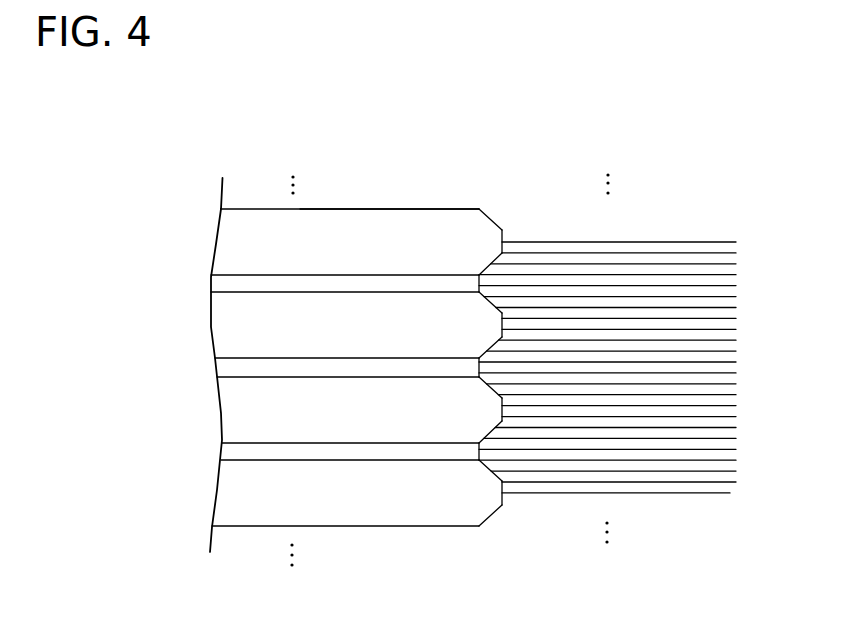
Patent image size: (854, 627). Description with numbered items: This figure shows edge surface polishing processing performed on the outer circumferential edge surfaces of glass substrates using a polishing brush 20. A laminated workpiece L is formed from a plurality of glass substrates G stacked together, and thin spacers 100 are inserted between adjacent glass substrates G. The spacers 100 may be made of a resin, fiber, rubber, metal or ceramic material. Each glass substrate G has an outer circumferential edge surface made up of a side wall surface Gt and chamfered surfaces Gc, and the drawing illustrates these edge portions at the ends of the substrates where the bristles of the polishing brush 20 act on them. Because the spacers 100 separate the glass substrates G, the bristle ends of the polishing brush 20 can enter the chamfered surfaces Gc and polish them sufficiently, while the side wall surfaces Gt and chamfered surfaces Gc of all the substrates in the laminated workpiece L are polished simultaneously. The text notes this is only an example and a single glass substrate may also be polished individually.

The glass substrate G is at (227, 244).
The spacer 100 is at (227, 285).
The chamfered surface Gc is at (492, 217).
The side wall surface Gt is at (507, 238).
The laminated workpiece L is at (359, 190).
The polishing brush 20 is at (671, 205).